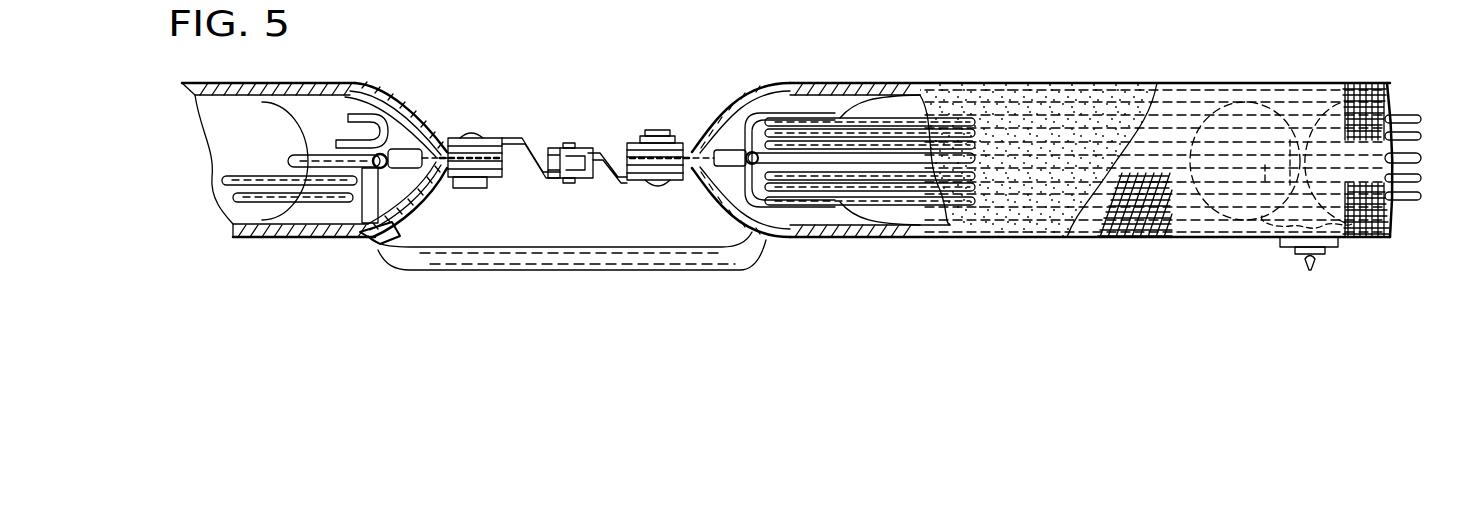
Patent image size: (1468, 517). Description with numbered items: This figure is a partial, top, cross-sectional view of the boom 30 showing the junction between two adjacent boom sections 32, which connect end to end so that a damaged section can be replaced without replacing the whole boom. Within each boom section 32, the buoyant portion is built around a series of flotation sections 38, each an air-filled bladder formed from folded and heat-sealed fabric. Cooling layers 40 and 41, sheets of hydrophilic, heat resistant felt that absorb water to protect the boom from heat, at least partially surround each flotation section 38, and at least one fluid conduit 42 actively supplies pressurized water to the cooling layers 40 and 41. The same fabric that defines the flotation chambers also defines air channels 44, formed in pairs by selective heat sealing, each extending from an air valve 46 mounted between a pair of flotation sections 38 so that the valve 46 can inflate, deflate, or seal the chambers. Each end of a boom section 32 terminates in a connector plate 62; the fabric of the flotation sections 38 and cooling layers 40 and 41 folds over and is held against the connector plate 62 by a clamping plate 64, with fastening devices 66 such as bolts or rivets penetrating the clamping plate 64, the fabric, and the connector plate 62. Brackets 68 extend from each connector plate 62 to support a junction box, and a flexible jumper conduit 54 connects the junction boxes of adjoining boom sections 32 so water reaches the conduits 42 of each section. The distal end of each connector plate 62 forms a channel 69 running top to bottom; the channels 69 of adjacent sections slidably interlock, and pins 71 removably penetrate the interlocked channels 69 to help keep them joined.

The boom 30 is at (567, 199).
The boom section 32 is at (819, 176).
The flotation section 38 is at (237, 107).
The cooling layer 40 is at (958, 105).
The cooling layer 41 is at (1004, 213).
The fluid conduit 42 is at (357, 117).
The air channel 44 is at (1262, 216).
The air valve 46 is at (1304, 258).
The jumper conduit 54 is at (707, 262).
The connector plate 62 is at (495, 138).
The clamping plate 64 is at (494, 178).
The fastening device 66 is at (470, 135).
The bracket 68 is at (430, 178).
The channel 69 is at (556, 148).
The pin 71 is at (575, 145).